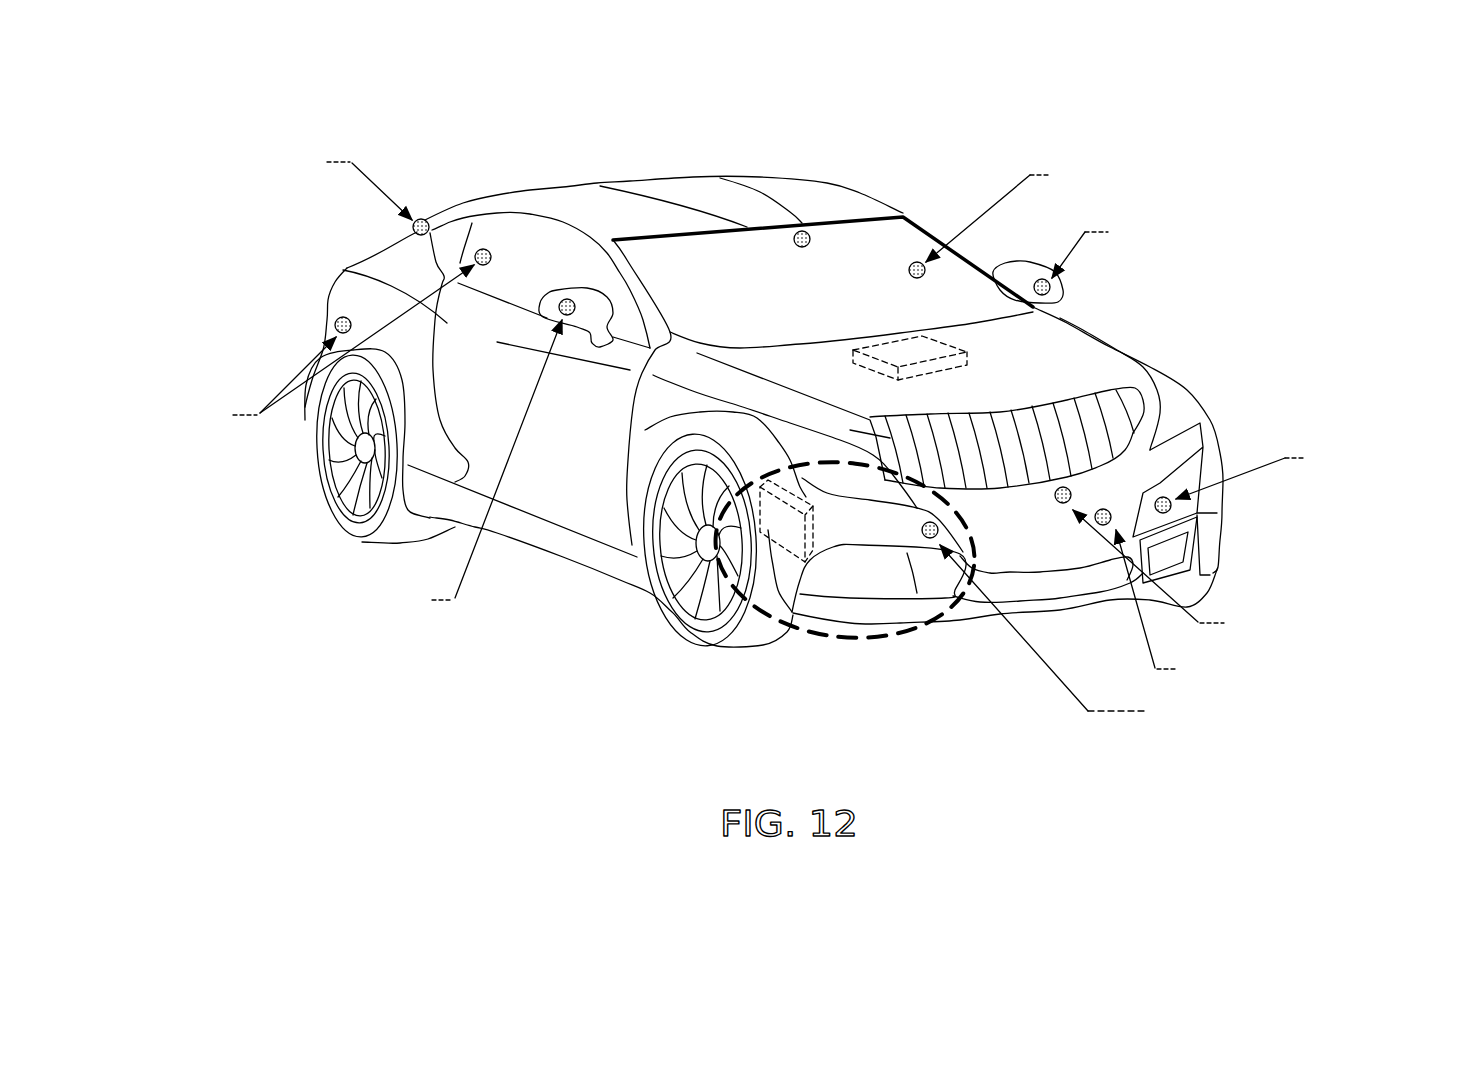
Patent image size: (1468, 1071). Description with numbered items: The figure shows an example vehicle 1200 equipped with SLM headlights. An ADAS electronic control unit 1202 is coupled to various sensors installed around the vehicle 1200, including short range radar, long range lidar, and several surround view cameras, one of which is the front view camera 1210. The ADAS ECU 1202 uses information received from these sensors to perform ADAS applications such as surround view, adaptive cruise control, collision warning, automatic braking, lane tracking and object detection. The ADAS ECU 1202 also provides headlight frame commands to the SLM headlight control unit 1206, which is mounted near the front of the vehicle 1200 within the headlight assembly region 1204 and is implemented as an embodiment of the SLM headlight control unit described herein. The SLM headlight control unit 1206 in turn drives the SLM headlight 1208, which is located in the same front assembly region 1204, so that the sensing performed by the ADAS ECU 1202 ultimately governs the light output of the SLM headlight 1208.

The vehicle 1200 is at (673, 178).
The ADAS electronic control unit (ECU) 1202 is at (975, 356).
The headlight assembly 1204 is at (868, 636).
The SLM headlight control unit 1206 is at (767, 532).
The SLM headlight 1208 is at (903, 584).
The front view camera 1210 is at (812, 239).